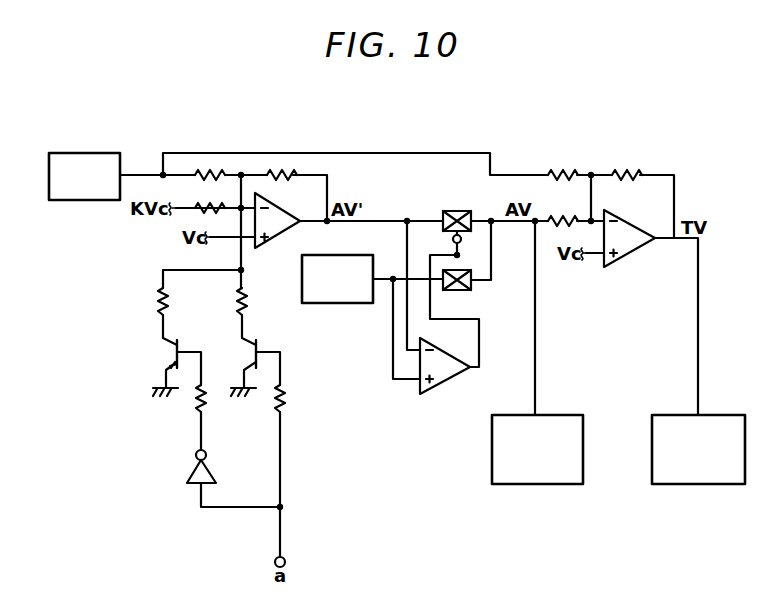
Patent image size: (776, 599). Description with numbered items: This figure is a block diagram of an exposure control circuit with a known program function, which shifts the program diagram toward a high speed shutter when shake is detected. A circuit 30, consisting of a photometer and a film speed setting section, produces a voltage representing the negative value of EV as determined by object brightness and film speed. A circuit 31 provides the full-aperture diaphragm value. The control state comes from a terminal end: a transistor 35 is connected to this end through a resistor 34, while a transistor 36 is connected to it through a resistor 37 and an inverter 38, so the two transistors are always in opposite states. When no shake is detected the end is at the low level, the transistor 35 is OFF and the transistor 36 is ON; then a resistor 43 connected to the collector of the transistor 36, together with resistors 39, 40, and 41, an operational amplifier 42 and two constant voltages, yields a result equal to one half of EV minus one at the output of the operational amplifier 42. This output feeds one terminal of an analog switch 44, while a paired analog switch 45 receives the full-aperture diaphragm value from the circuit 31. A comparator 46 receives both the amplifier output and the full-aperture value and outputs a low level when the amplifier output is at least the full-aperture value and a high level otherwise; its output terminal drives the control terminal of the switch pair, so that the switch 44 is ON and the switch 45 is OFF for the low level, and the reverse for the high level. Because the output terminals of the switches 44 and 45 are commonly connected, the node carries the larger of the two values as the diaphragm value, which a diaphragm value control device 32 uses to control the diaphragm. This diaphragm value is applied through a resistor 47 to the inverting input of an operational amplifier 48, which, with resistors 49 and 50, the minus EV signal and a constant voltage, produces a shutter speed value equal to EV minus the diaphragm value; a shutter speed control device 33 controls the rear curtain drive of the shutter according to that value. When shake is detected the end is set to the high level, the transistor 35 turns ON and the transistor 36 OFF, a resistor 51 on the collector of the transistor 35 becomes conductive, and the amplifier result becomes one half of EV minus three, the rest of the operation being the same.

The circuit 30 is at (103, 152).
The circuit 31 is at (352, 303).
The diaphragm value control device 32 is at (569, 484).
The shutter speed control device 33 is at (732, 484).
The resistor 34 is at (283, 407).
The transistor 35 is at (259, 344).
The transistor 36 is at (180, 344).
The resistor 37 is at (204, 407).
The inverter 38 is at (212, 468).
The resistor 39 is at (205, 178).
The resistor 40 is at (282, 178).
The resistor 41 is at (216, 192).
The operational amplifier 42 is at (268, 243).
The resistor 43 is at (159, 301).
The analog switch 44 is at (457, 211).
The analog switch 45 is at (461, 290).
The comparator 46 is at (450, 382).
The resistor 47 is at (562, 217).
The operational amplifier 48 is at (632, 251).
The resistor 49 is at (562, 170).
The resistor 50 is at (626, 170).
The resistor 51 is at (239, 301).